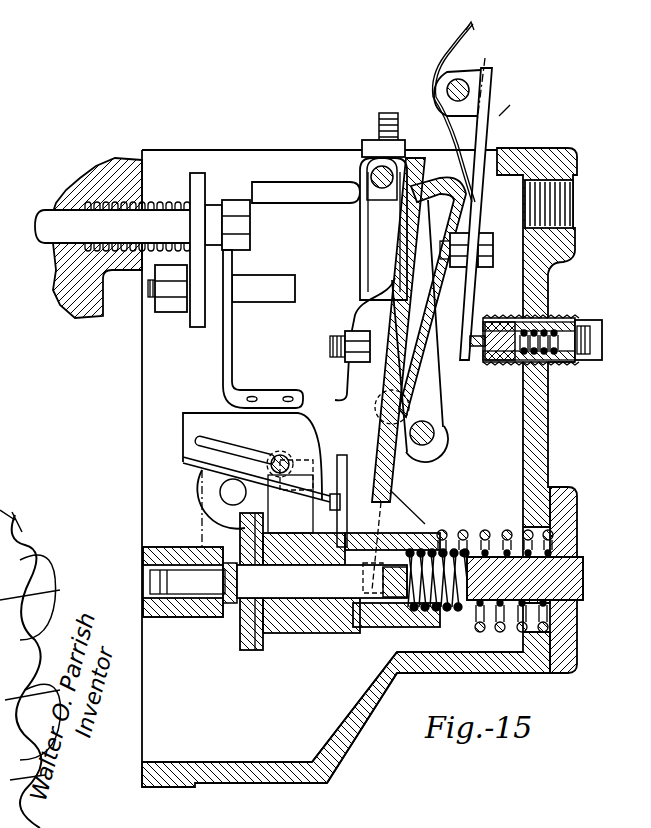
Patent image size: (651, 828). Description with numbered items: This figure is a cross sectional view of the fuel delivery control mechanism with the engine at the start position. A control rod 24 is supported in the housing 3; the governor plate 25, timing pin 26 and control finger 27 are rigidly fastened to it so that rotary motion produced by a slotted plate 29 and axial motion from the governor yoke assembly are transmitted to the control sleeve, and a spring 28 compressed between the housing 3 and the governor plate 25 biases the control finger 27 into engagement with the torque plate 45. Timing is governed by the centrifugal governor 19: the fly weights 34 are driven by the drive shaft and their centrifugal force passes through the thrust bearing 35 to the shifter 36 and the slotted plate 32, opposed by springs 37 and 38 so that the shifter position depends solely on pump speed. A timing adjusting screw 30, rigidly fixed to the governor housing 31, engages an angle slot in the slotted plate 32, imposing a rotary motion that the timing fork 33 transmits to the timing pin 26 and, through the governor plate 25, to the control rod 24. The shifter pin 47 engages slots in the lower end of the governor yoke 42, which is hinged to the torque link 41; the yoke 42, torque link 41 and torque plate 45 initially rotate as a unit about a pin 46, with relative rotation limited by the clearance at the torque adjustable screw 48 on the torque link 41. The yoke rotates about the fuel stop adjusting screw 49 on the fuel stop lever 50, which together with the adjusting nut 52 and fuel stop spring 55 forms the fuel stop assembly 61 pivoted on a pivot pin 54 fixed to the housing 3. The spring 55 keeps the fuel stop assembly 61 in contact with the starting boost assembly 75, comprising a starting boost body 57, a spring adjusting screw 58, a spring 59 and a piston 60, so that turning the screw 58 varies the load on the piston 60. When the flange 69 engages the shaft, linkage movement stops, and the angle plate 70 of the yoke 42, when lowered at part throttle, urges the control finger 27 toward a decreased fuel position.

The housing 3 is at (577, 250).
The centrifugal governor 19 is at (195, 509).
The control rod 24 is at (165, 212).
The governor plate 25 is at (193, 323).
The timing pin 26 is at (257, 300).
The control finger 27 is at (295, 197).
The spring 28 is at (173, 202).
The slotted plate 29 is at (176, 447).
The timing adjusting screw 30 is at (282, 455).
The governor housing 31 is at (343, 747).
The slotted plate 32 is at (306, 445).
The timing fork 33 is at (223, 377).
The fly weights 34 is at (305, 530).
The thrust bearing 35 is at (262, 650).
The shifter 36 is at (418, 607).
The spring 37 is at (485, 529).
The spring 38 is at (583, 571).
The torque link 41 is at (347, 297).
The governor yoke 42 is at (398, 490).
The torque plate 45 is at (358, 250).
The pin 46 is at (432, 440).
The shifter pin 47 is at (390, 628).
The torque adjustable screw 48 is at (370, 338).
The fuel stop adjusting screw 49 is at (452, 266).
The fuel stop lever 50 is at (482, 135).
The adjusting nut 52 is at (481, 268).
The pivot pin 54 is at (461, 82).
The fuel stop spring 55 is at (448, 45).
The starting boost body 57 is at (570, 318).
The spring adjusting screw 58 is at (602, 352).
The spring 59 is at (513, 361).
The piston 60 is at (480, 350).
The fuel stop assembly 61 is at (507, 115).
The flange 69 is at (385, 197).
The angle plate 70 is at (462, 215).
The starting boost assembly 75 is at (574, 368).